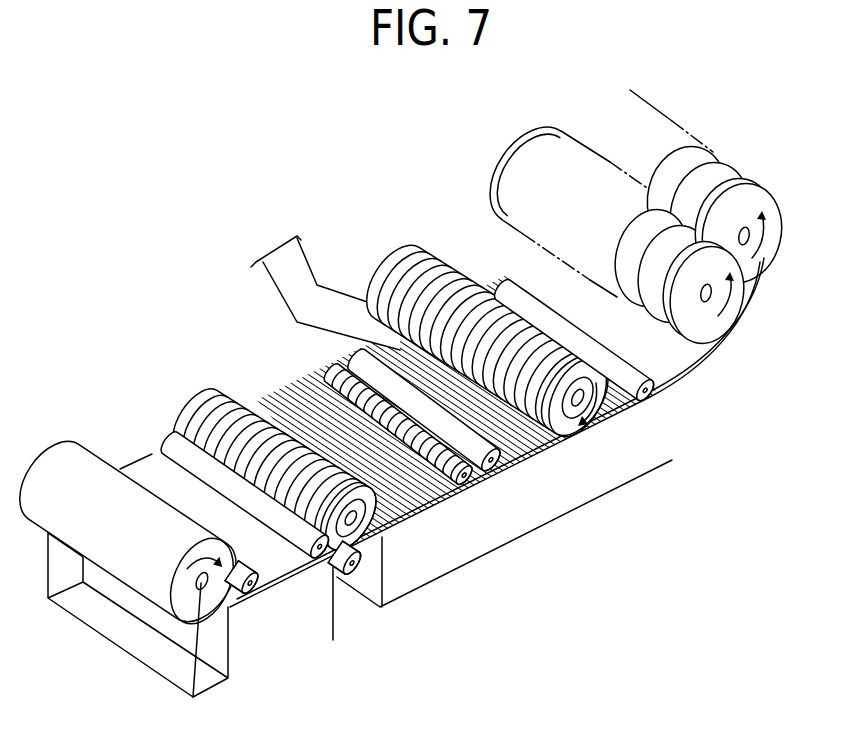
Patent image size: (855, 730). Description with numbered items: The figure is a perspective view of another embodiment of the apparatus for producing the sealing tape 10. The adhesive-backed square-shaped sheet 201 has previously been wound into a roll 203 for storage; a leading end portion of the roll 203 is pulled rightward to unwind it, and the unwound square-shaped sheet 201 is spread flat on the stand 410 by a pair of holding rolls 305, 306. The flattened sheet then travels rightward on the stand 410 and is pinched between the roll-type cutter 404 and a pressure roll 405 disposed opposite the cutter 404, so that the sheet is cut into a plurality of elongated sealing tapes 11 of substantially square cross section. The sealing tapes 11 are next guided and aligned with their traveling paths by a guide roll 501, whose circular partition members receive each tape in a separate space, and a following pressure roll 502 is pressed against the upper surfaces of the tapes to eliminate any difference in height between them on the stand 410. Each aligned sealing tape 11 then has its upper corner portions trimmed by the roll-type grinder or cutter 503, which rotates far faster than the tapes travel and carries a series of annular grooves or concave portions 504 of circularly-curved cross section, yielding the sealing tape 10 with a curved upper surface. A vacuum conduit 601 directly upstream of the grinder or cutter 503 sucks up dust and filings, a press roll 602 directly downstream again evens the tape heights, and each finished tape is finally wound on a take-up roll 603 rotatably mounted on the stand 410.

The sealing tape 10 is at (697, 363).
The sealing tapes 11 is at (407, 497).
The square-shaped sheet 201 is at (150, 467).
The roll 203 is at (63, 447).
The holding roll 305 is at (258, 598).
The holding roll 306 is at (173, 437).
The roll-type cutter 404 is at (211, 388).
The pressure roll 405 is at (360, 578).
The stand 410 is at (553, 510).
The guide roll 501 is at (322, 370).
The pressure roll 502 is at (346, 356).
The roll-type grinder or cutter 503 is at (403, 262).
The annular grooves or concave portions 504 is at (450, 262).
The vacuum conduit 601 is at (337, 305).
The press roll 602 is at (650, 401).
The take-up roll 603 is at (740, 180).